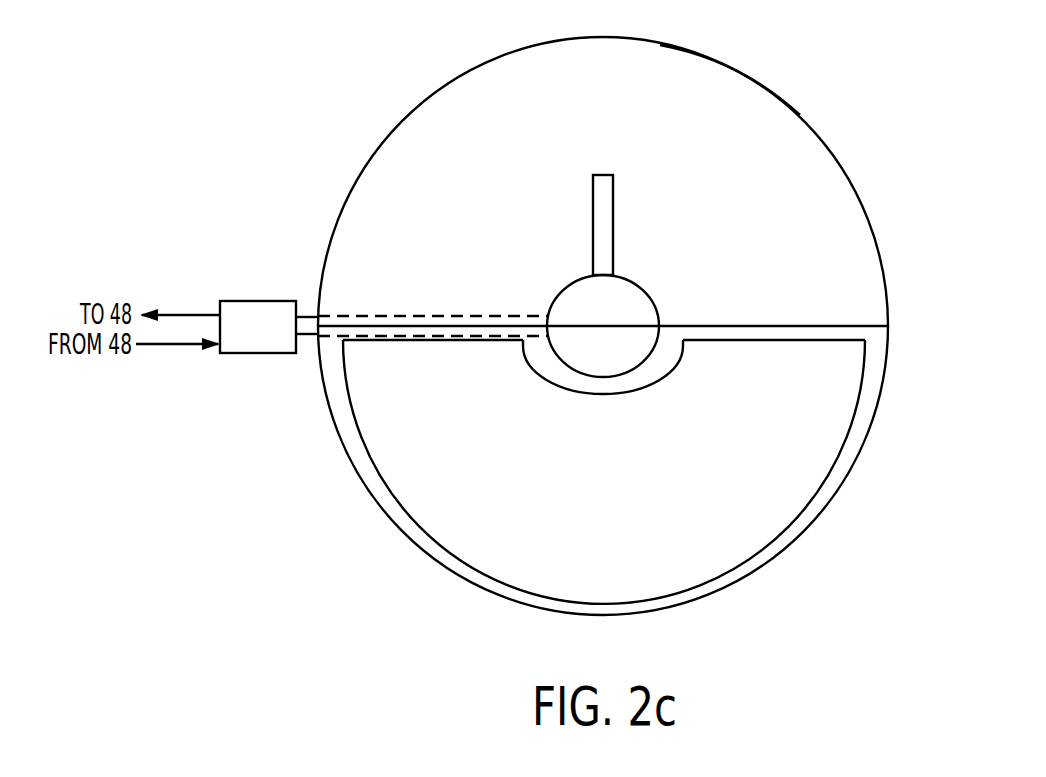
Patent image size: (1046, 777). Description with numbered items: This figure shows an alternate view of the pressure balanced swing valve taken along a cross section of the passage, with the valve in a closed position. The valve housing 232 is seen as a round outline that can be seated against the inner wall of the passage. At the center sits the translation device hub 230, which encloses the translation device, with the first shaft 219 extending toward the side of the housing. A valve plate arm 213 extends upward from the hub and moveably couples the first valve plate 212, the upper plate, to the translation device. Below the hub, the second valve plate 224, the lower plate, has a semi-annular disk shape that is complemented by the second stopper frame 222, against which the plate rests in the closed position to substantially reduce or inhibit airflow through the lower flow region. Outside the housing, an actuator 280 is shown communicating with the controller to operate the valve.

The first valve plate 212 is at (467, 118).
The valve housing 232 is at (725, 62).
The valve plate arm 213 is at (603, 208).
The translation device hub 230 is at (553, 305).
The first shaft 219 is at (363, 315).
The actuator 280 is at (258, 312).
The second stopper frame 222 is at (875, 342).
The second valve plate 224 is at (470, 523).